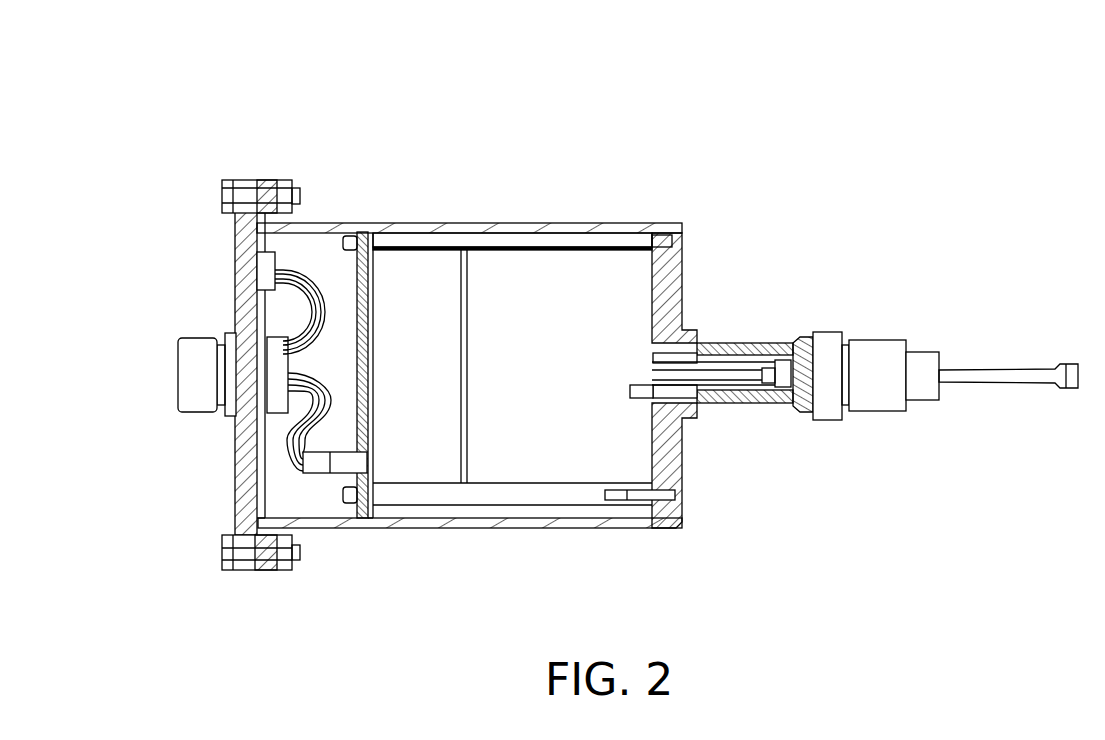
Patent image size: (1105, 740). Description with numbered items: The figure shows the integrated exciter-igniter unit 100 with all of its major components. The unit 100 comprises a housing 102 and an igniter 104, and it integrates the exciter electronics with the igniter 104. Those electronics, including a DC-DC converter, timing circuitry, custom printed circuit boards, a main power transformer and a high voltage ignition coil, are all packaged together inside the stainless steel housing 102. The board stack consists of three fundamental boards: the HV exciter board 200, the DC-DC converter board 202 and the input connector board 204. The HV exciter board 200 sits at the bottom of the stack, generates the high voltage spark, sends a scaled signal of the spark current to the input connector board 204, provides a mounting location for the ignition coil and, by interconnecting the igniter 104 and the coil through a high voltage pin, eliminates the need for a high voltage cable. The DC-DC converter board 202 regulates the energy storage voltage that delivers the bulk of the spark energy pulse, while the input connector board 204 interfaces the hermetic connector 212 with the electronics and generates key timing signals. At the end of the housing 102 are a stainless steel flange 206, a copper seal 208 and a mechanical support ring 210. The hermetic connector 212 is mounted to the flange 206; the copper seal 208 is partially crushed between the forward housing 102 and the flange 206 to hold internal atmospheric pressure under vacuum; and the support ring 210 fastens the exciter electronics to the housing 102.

The exciter-igniter unit 100 is at (836, 159).
The housing 102 is at (556, 300).
The igniter 104 is at (886, 354).
The HV exciter board 200 is at (637, 262).
The DC-DC converter board 202 is at (472, 250).
The input connector board 204 is at (418, 248).
The stainless steel flange 206 is at (247, 182).
The copper seal 208 is at (290, 223).
The mechanical support ring 210 is at (373, 273).
The hermetic connector 212 is at (195, 392).